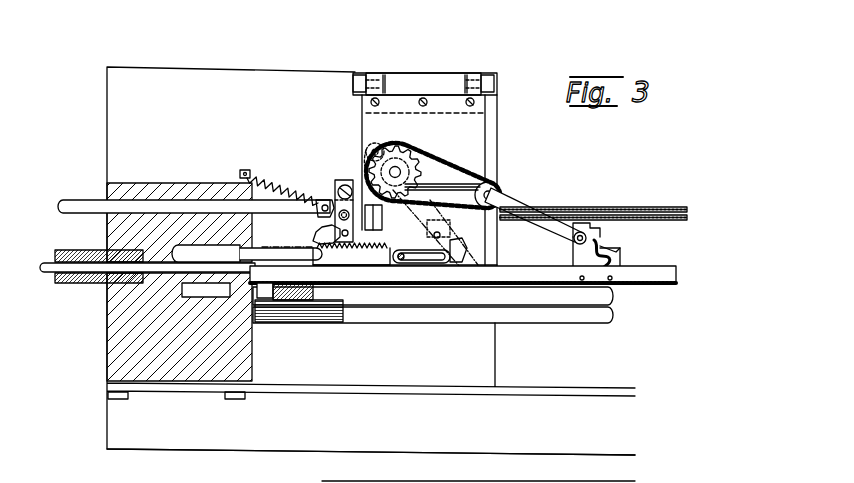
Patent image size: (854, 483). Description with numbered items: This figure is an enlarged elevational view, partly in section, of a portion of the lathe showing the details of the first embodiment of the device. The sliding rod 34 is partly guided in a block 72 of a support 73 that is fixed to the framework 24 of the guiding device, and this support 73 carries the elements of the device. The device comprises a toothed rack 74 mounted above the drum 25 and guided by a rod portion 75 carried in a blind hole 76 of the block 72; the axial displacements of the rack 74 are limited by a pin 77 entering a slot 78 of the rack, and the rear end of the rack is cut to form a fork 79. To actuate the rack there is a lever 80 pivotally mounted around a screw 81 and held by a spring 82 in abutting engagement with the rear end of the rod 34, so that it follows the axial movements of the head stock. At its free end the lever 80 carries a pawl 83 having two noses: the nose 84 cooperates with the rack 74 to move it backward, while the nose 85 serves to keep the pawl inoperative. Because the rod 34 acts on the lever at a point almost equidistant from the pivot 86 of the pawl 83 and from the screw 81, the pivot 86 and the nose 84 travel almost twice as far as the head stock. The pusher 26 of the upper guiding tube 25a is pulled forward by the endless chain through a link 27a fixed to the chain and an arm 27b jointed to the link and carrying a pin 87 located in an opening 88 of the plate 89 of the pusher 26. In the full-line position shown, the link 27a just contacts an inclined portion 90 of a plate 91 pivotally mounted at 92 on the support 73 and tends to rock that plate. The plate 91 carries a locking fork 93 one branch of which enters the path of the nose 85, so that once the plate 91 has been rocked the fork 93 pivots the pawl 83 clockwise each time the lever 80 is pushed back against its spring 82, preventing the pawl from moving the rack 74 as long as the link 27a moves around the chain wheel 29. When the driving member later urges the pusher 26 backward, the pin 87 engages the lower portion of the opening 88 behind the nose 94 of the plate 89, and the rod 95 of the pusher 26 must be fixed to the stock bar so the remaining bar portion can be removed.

The framework 24 is at (570, 447).
The drum 25 is at (563, 330).
The upper guiding tube 25a is at (652, 285).
The pusher 26 is at (613, 258).
The link 27a is at (380, 147).
The arm 27b is at (534, 214).
The chain wheel 29 is at (406, 158).
The sliding rod 34 is at (87, 203).
The block 72 is at (160, 190).
The support 73 is at (225, 88).
The toothed rack 74 is at (383, 252).
The rod portion 75 is at (234, 247).
The blind hole 76 is at (184, 247).
The pin 77 is at (398, 259).
The slot 78 is at (435, 262).
The fork 79 is at (472, 264).
The lever 80 is at (338, 183).
The screw 81 is at (347, 185).
The spring 82 is at (263, 181).
The pawl 83 is at (326, 231).
The nose 84 is at (327, 232).
The nose 85 is at (377, 262).
The pivot 86 is at (345, 238).
The pin 87 is at (581, 233).
The opening 88 is at (598, 243).
The plate 89 is at (578, 262).
The inclined portion 90 is at (443, 186).
The plate 91 is at (405, 105).
The pivot 92 is at (358, 75).
The locking fork 93 is at (379, 227).
The nose 94 is at (608, 245).
The rod 95 is at (513, 275).